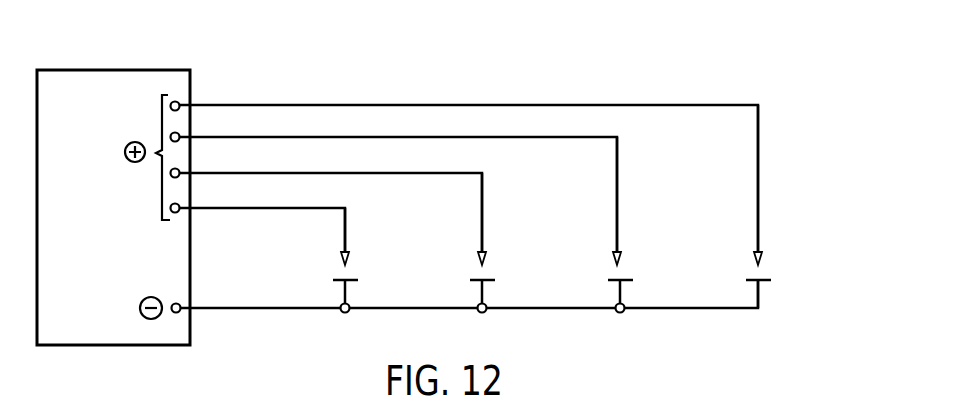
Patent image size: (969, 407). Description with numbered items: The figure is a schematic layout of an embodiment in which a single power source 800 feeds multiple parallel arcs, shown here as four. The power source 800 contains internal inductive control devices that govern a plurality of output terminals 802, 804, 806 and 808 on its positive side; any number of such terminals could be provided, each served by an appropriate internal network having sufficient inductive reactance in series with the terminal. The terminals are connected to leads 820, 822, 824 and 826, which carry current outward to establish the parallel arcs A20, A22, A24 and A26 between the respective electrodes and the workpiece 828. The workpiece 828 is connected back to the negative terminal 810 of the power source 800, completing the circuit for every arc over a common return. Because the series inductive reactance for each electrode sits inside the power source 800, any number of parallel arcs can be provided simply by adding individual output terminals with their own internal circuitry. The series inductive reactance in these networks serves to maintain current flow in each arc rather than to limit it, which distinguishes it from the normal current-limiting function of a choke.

The power source 800 is at (133, 70).
The output terminal 802 is at (178, 103).
The output terminal 804 is at (178, 136).
The output terminal 806 is at (178, 172).
The output terminal 808 is at (178, 207).
The terminal 810 is at (180, 306).
The lead 820 is at (762, 210).
The lead 822 is at (621, 224).
The lead 824 is at (485, 237).
The lead 826 is at (348, 237).
The workpiece 828 is at (632, 312).
The parallel arc A20 is at (770, 271).
The parallel arc A22 is at (624, 273).
The parallel arc A24 is at (488, 273).
The parallel arc A26 is at (353, 273).